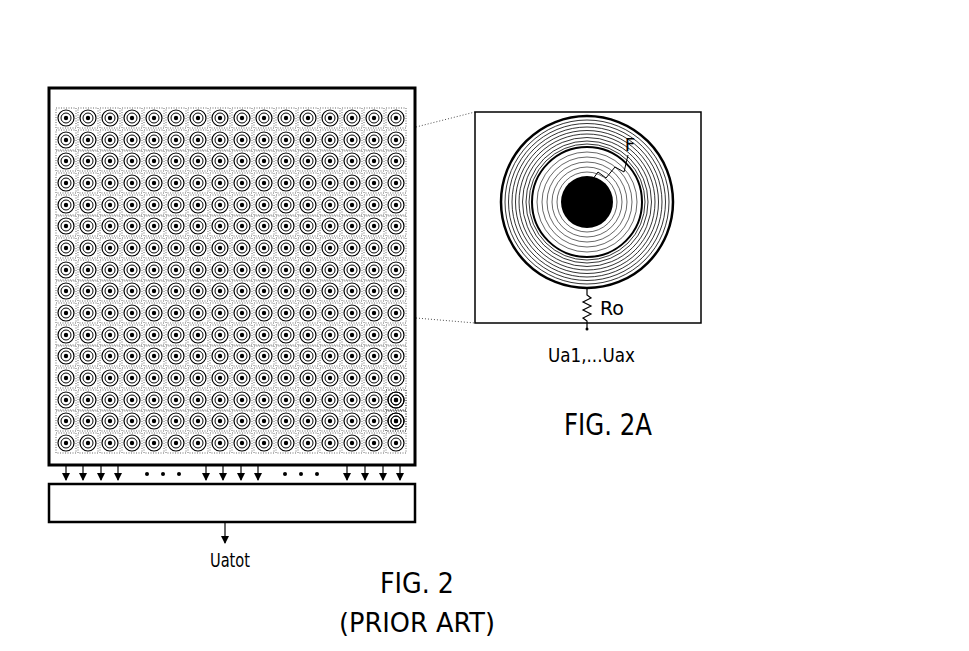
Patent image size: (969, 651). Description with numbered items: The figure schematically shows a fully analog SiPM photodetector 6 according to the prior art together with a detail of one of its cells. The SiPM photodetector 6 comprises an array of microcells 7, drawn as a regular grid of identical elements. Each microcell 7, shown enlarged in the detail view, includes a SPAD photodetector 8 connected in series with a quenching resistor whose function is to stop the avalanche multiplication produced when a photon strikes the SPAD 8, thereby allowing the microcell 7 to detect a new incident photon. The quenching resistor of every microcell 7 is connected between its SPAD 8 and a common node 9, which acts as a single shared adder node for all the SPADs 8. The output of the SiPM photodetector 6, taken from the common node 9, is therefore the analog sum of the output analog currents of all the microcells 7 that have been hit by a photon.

In FIG. 2, the SiPM photodetector 6 is at (212, 86).
In FIG. 2, the microcell 7 is at (405, 380).
In FIG. 2A, the microcell 7 is at (628, 108).
In FIG. 2A, the SPAD photodetector 8 is at (541, 133).
In FIG. 2, the common node 9 is at (413, 501).